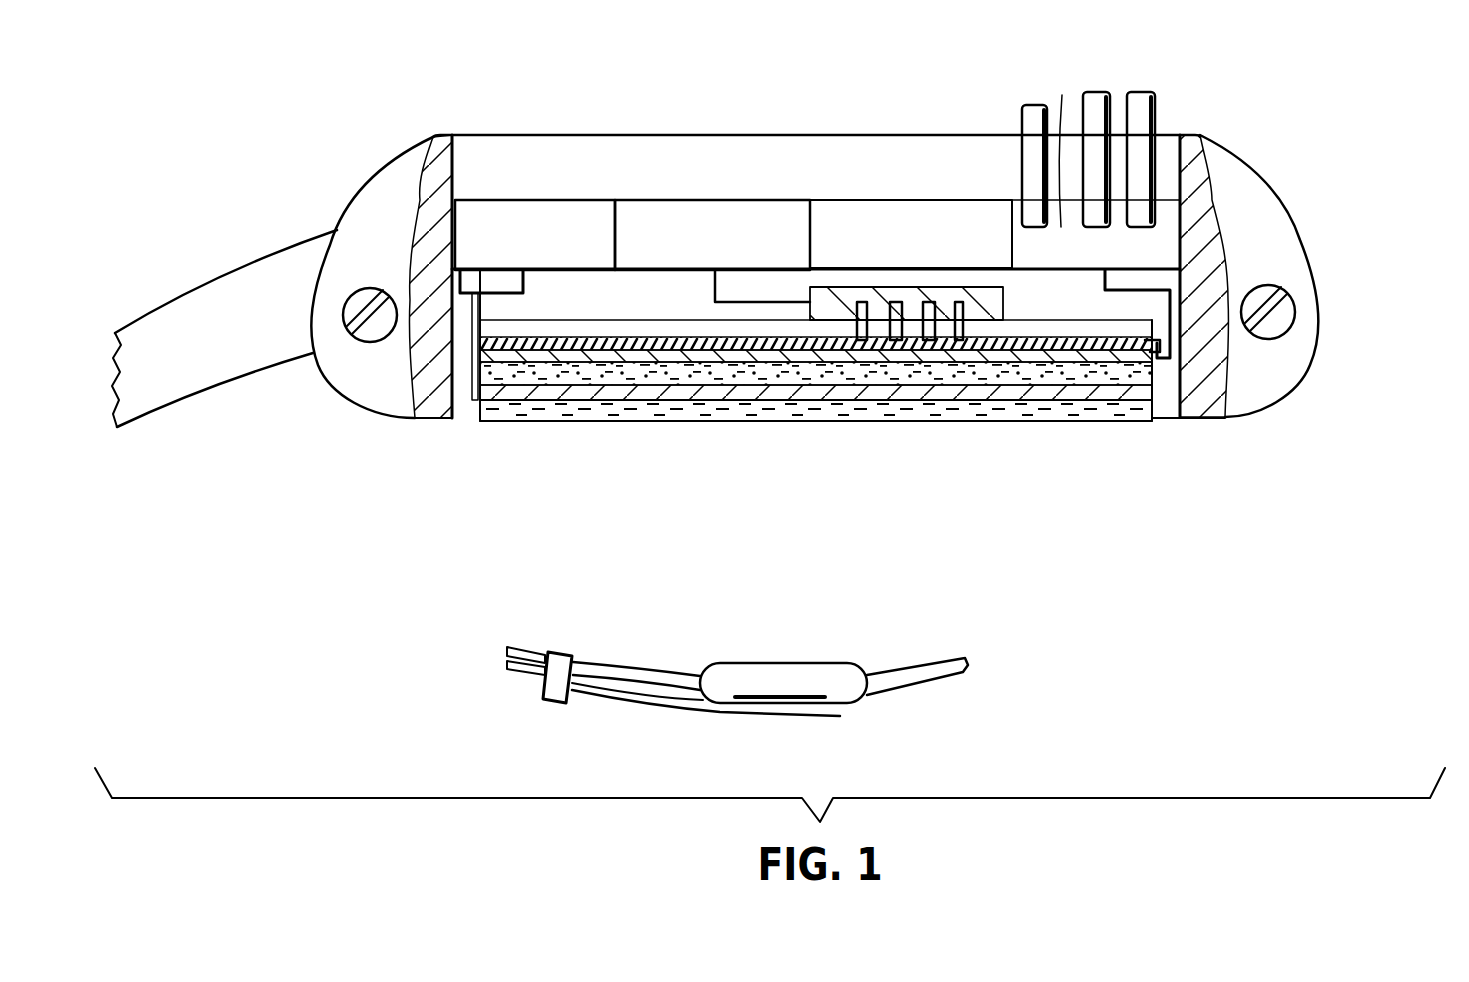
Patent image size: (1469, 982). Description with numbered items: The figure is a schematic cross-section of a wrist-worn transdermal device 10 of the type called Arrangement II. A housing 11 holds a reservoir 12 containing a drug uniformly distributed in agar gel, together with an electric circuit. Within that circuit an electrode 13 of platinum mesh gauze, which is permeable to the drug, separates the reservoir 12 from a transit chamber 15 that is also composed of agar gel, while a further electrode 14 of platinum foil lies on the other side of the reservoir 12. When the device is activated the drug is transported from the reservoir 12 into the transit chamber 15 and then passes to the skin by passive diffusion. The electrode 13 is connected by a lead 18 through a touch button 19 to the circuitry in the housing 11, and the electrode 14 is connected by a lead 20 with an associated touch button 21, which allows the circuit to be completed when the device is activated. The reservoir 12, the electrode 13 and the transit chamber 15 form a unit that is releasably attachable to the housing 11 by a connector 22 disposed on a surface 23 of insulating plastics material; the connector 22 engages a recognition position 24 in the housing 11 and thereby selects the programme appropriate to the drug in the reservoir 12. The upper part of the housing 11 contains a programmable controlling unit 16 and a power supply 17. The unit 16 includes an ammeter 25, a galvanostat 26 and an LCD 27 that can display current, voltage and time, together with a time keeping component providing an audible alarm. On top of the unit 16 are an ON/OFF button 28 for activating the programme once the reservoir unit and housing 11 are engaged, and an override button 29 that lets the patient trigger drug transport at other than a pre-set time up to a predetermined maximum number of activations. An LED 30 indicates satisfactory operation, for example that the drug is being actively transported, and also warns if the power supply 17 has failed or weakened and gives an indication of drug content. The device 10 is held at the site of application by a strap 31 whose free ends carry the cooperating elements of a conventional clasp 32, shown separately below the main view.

The transdermal device 10 is at (360, 136).
The housing 11 is at (417, 278).
The reservoir 12 is at (1053, 373).
The electrode 13 is at (587, 393).
The further electrode 14 is at (1010, 360).
The transit chamber 15 is at (770, 413).
The programmable controlling unit 16 is at (717, 228).
The power supply 17 is at (532, 237).
The lead 18 is at (495, 292).
The touch button 19 is at (470, 408).
The lead 20 is at (1137, 288).
The touch button 21 is at (1152, 355).
The connector 22 is at (885, 313).
The surface 23 is at (707, 340).
The recognition position 24 is at (941, 313).
The ammeter 25 is at (990, 217).
The galvanostat 26 is at (1063, 175).
The LCD 27 is at (805, 173).
The ON/OFF button 28 is at (1097, 103).
The override button 29 is at (1028, 112).
The LED 30 is at (1137, 108).
The strap 31 is at (203, 358).
The clasp 32 is at (822, 680).